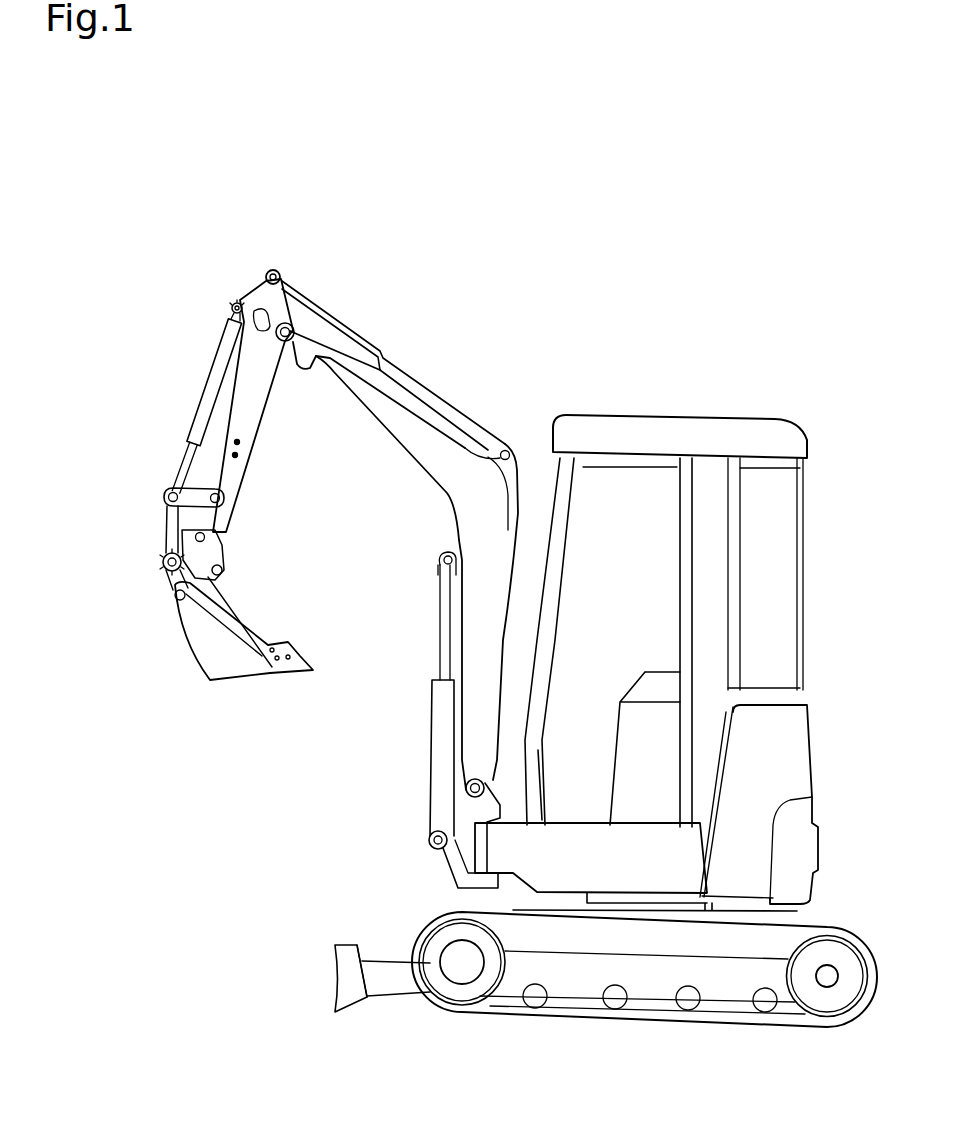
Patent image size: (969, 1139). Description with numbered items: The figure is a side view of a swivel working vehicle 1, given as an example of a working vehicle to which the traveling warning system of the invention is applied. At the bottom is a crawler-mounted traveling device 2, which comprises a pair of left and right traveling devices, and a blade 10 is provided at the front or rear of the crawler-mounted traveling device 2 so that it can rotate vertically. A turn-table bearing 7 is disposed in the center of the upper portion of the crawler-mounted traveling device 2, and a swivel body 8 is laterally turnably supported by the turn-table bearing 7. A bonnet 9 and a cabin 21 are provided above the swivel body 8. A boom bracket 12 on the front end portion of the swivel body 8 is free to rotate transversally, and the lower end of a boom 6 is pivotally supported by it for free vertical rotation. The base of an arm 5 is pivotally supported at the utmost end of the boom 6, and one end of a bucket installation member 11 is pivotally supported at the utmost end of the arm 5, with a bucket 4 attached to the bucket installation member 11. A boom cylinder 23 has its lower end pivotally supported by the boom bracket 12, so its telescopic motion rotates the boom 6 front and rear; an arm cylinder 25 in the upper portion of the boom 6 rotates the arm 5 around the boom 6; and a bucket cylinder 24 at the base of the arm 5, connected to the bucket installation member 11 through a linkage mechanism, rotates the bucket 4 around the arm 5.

The swivel working vehicle 1 is at (584, 313).
The crawler-mounted traveling device 2 is at (534, 1043).
The bucket 4 is at (235, 665).
The arm 5 is at (263, 400).
The boom 6 is at (455, 482).
The turn-table bearing 7 is at (667, 905).
The swivel body 8 is at (632, 876).
The bonnet 9 is at (770, 778).
The blade 10 is at (348, 968).
The bucket installation member 11 is at (210, 556).
The boom bracket 12 is at (465, 862).
The cabin 21 is at (645, 430).
The boom cylinder 23 is at (440, 715).
The bucket cylinder 24 is at (217, 368).
The arm cylinder 25 is at (432, 397).